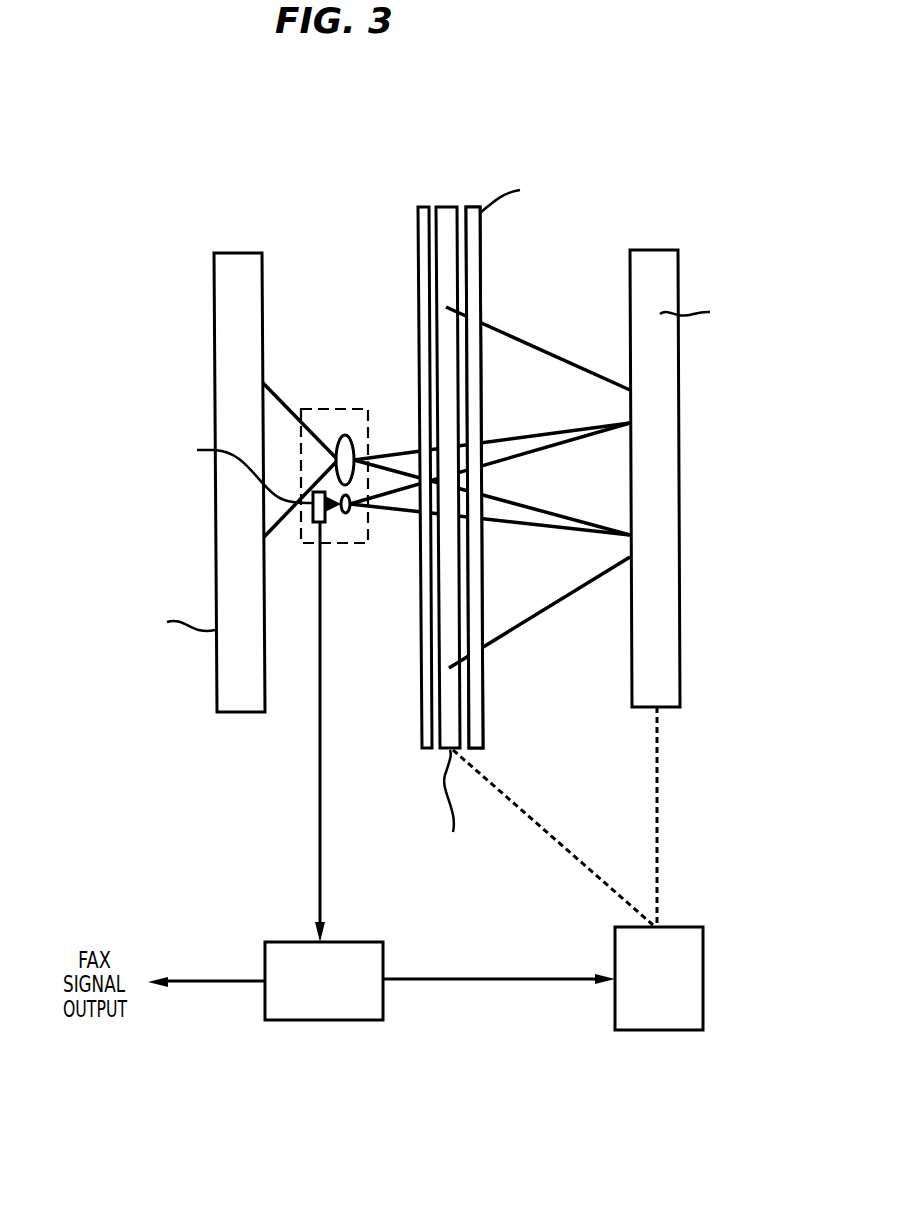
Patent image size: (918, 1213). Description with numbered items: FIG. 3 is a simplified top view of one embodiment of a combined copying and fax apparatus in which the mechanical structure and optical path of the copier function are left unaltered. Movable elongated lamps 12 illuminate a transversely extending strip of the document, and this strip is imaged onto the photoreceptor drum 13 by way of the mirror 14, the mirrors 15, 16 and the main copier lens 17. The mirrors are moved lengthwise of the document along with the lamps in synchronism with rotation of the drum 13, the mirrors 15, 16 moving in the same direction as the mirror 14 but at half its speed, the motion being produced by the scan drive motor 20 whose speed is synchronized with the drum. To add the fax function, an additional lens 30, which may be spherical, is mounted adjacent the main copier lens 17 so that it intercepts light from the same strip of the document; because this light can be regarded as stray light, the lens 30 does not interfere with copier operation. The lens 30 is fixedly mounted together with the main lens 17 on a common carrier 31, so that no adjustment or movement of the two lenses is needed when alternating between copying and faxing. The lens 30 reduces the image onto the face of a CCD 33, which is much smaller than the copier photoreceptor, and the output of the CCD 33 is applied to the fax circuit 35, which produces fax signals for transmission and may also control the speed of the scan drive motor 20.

The elongated lamps 12 is at (470, 207).
The photoreceptor drum 13 is at (214, 282).
The mirror 14 is at (443, 750).
The mirror 15 is at (703, 429).
The mirror 16 is at (655, 250).
The main copier lens 17 is at (351, 410).
The additional lens 30 is at (347, 513).
The common carrier 31 is at (318, 409).
The CCD 33 is at (315, 522).
The fax circuit 35 is at (296, 1020).
The scan drive motor 20 is at (643, 1030).